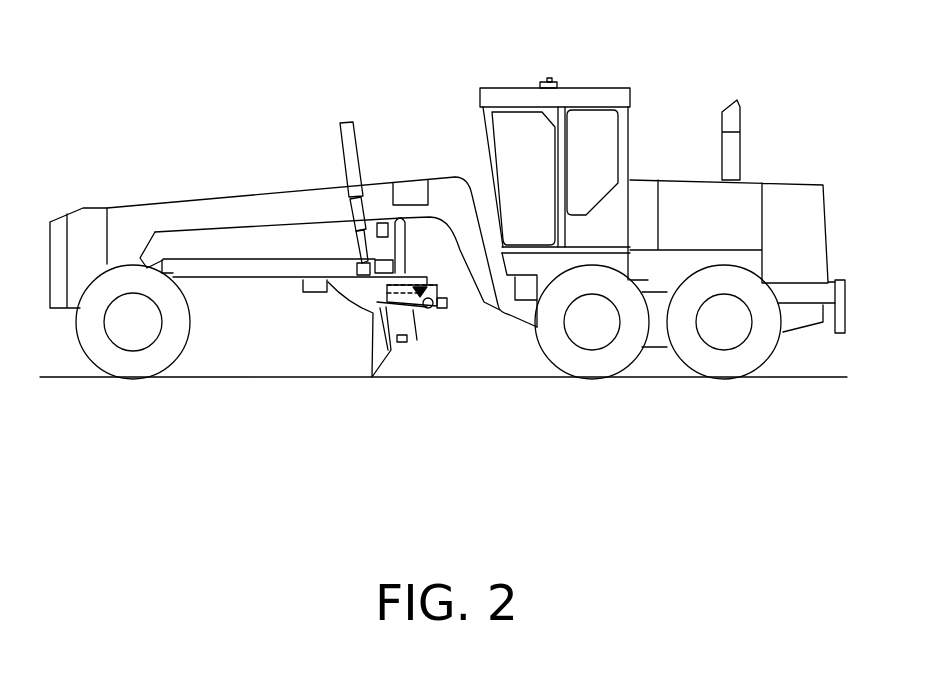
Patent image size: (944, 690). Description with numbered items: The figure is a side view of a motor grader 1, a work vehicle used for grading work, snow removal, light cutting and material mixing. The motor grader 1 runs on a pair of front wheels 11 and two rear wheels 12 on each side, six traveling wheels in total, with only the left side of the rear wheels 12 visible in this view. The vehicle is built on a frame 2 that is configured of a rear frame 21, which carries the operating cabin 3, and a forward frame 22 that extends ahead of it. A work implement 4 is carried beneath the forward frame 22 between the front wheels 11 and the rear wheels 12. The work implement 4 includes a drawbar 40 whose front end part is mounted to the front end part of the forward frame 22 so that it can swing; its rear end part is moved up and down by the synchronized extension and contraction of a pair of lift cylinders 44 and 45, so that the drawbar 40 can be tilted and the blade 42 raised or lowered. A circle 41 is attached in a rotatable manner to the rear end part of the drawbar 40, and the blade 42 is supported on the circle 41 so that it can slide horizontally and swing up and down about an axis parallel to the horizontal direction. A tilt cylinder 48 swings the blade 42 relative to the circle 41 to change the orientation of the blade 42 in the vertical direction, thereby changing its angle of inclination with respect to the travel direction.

The motor grader 1 is at (250, 72).
The frame 2 is at (444, 148).
The operating cabin 3 is at (602, 89).
The work implement 4 is at (324, 361).
The front wheels 11 is at (128, 370).
The rear wheels 12 is at (590, 367).
The rear frame 21 is at (797, 317).
The forward frame 22 is at (218, 197).
The drawbar 40 is at (220, 278).
The circle 41 is at (313, 290).
The blade 42 is at (380, 350).
The lift cylinder 44 is at (339, 153).
The lift cylinder 45 is at (352, 138).
The tilt cylinder 48 is at (417, 342).